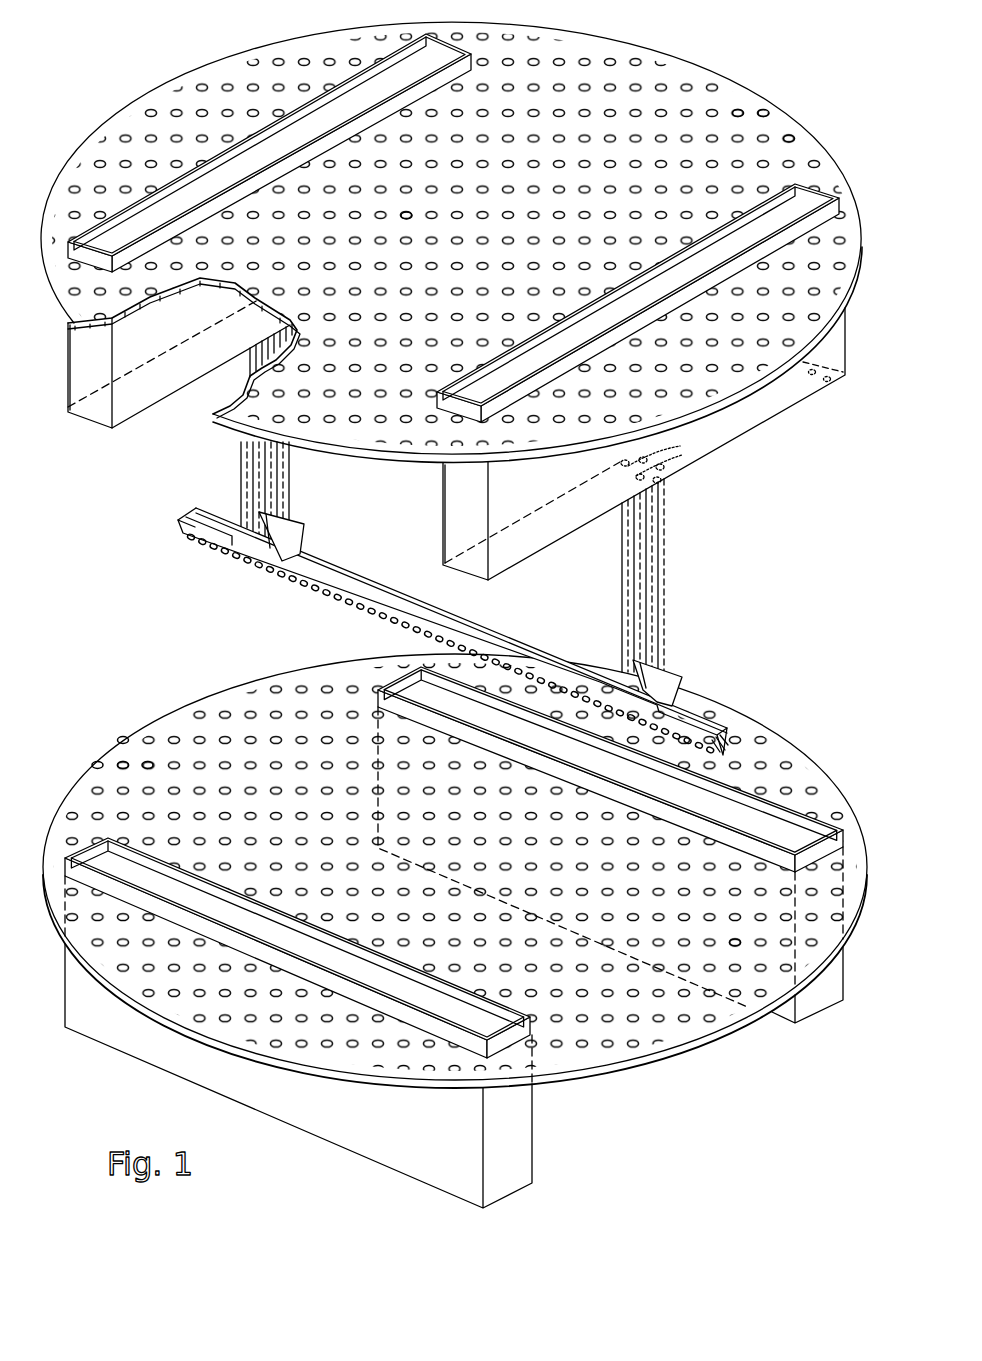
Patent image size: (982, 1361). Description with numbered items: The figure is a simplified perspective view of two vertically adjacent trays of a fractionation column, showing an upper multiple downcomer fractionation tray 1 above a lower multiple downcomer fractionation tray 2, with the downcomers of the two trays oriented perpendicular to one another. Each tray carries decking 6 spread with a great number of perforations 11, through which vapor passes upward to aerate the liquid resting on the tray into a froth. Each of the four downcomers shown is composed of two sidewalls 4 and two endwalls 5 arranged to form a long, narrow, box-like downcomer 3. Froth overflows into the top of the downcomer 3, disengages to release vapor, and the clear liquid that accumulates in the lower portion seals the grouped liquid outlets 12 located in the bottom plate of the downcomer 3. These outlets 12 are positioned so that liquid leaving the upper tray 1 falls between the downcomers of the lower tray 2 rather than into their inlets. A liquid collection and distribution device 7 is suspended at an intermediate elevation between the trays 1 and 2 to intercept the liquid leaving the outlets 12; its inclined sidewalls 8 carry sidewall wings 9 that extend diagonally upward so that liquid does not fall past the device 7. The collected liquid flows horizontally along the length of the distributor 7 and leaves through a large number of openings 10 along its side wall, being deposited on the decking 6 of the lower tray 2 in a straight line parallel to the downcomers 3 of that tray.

The upper multiple downcomer fractionation tray 1 is at (788, 370).
The lower multiple downcomer fractionation tray 2 is at (596, 1072).
The downcomer 3 is at (160, 400).
The sidewall 4 is at (676, 253).
The endwall 5 is at (103, 380).
The decking 6 is at (460, 207).
The liquid collection and distribution device 7 is at (714, 713).
The inclined sidewall 8 is at (571, 665).
The sidewall wing 9 is at (308, 540).
The openings 10 is at (212, 550).
The perforations 11 is at (788, 134).
The liquid outlets 12 is at (664, 454).